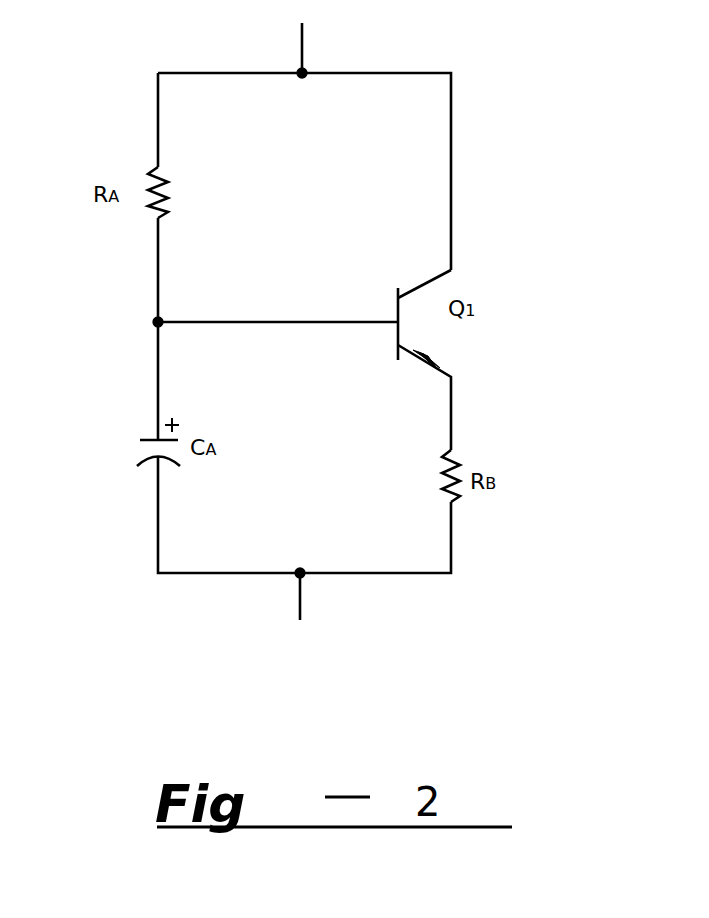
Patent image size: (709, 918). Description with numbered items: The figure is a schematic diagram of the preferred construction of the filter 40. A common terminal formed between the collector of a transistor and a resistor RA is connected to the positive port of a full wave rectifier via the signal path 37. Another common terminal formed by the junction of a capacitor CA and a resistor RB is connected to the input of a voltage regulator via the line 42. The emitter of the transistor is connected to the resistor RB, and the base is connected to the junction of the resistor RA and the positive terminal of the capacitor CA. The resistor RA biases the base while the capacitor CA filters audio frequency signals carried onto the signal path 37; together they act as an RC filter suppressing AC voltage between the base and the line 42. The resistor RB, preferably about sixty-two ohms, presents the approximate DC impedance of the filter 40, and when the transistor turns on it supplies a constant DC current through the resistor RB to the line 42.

The signal path 37 is at (302, 43).
The filter 40 is at (504, 118).
The line 42 is at (301, 594).